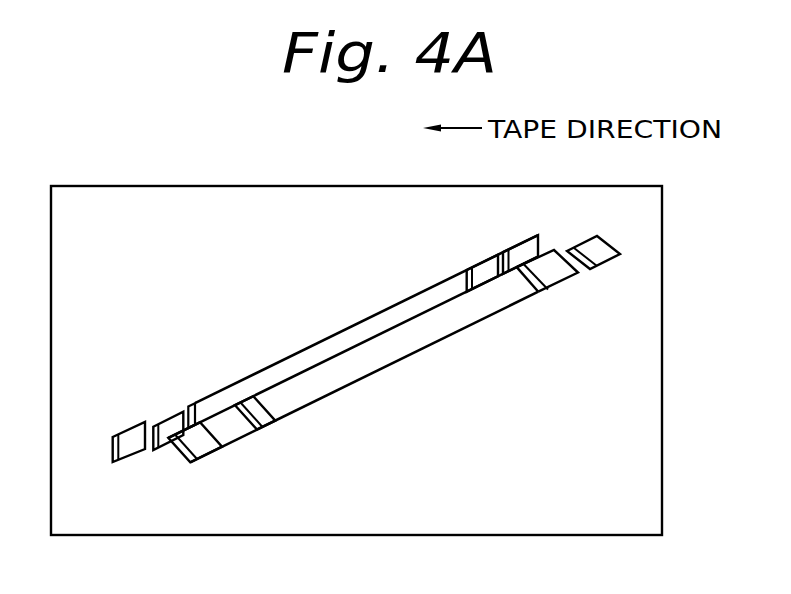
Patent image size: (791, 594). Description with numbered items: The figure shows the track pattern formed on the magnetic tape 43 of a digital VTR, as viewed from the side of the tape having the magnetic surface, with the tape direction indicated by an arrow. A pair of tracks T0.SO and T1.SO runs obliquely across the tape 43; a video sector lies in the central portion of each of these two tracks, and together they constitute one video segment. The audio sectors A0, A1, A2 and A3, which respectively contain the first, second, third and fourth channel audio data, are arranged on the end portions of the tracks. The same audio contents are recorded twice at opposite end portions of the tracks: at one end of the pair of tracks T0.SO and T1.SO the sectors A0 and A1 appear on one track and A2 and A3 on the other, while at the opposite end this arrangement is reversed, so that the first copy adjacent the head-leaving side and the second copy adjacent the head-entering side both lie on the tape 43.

The magnetic tape 43 is at (188, 186).
The audio sector A0 is at (132, 437).
The audio sector A1 is at (171, 418).
The audio sector A2 is at (207, 444).
The audio sector A3 is at (243, 426).
The track T0 of video segment S0 T0.SO is at (330, 342).
The track T1 of video segment S0 T1.SO is at (417, 338).